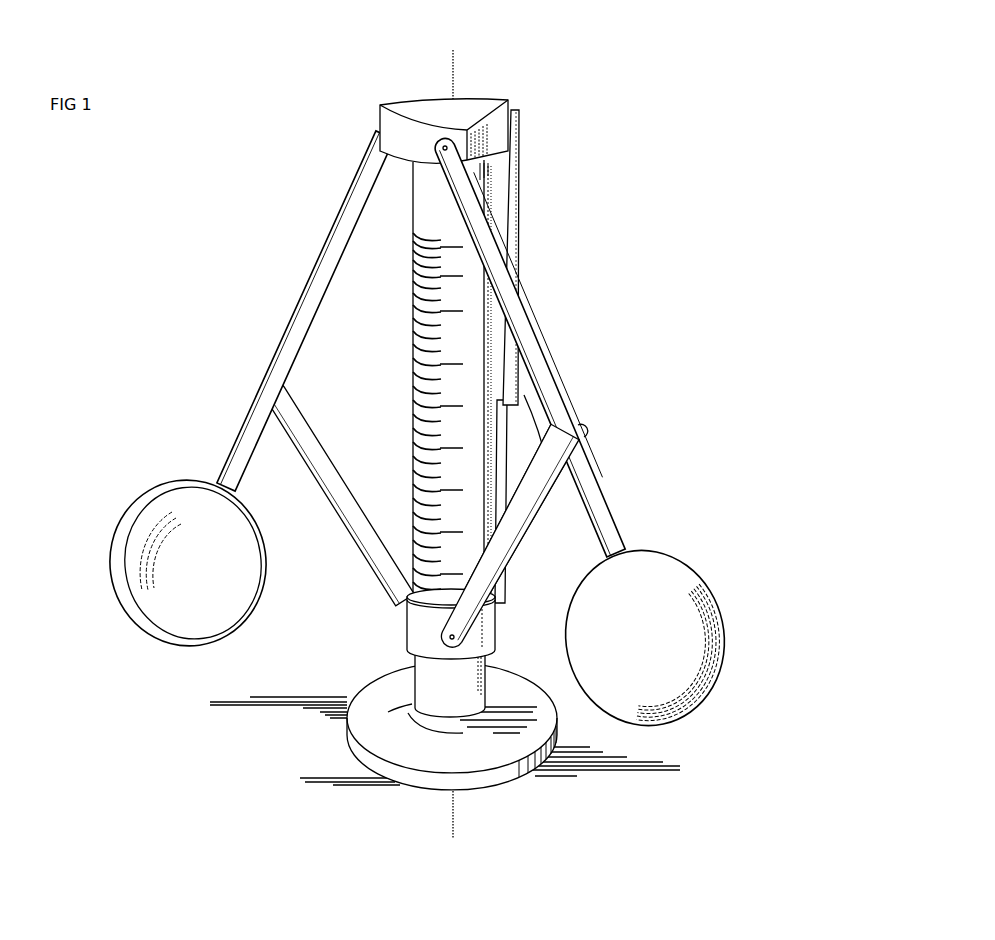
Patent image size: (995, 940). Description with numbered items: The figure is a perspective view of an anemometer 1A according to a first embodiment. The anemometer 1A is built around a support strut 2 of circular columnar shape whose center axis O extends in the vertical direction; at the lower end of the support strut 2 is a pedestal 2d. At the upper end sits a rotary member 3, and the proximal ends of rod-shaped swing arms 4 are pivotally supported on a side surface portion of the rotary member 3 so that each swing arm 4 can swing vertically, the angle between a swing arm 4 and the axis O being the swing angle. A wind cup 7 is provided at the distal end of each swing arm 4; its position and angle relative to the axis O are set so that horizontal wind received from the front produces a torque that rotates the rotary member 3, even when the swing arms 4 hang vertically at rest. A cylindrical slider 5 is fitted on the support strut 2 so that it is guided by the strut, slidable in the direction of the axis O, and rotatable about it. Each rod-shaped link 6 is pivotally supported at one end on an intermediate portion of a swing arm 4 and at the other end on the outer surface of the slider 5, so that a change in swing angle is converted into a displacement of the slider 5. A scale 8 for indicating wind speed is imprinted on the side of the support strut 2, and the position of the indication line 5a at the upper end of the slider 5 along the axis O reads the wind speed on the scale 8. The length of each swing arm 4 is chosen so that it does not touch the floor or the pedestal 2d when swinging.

The anemometer 1A is at (559, 68).
The axis O is at (452, 78).
The support strut 2 is at (437, 213).
The pedestal 2d is at (378, 733).
The rotary member 3 is at (392, 128).
The swing arm 4 is at (348, 225).
The slider 5 is at (418, 632).
The indication line 5a is at (430, 605).
The link 6 is at (355, 523).
The wind cup 7 is at (122, 532).
The scale 8 is at (432, 370).